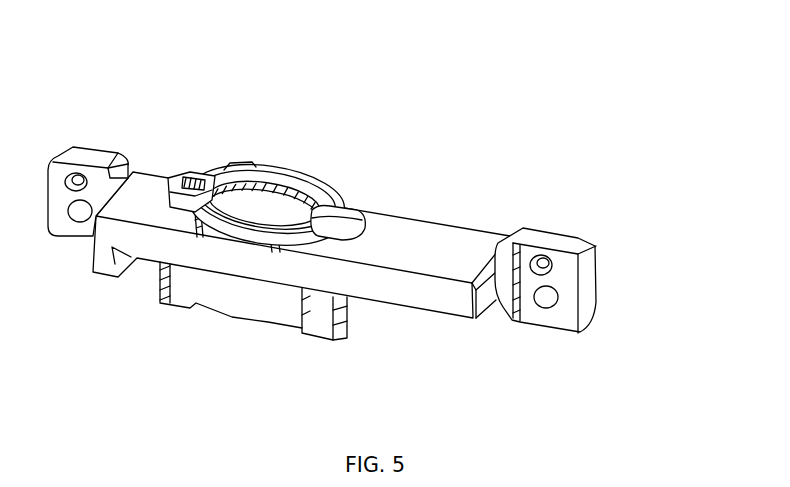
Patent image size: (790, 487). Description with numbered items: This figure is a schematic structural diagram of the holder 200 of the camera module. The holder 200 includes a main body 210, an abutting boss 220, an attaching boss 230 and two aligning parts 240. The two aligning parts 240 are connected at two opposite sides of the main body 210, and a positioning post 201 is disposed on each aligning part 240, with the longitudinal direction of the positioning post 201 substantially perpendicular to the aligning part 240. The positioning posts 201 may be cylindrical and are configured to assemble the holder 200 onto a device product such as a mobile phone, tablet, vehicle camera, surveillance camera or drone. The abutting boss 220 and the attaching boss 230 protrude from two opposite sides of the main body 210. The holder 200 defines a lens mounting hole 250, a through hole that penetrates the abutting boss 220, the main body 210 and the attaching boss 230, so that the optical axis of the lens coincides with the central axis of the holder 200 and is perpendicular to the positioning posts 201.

The holder 200 is at (158, 55).
The positioning post 201 is at (547, 262).
The main body 210 is at (467, 241).
The abutting boss 220 is at (341, 202).
The attaching boss 230 is at (242, 300).
The aligning part 240 is at (589, 300).
The lens mounting hole 250 is at (268, 208).